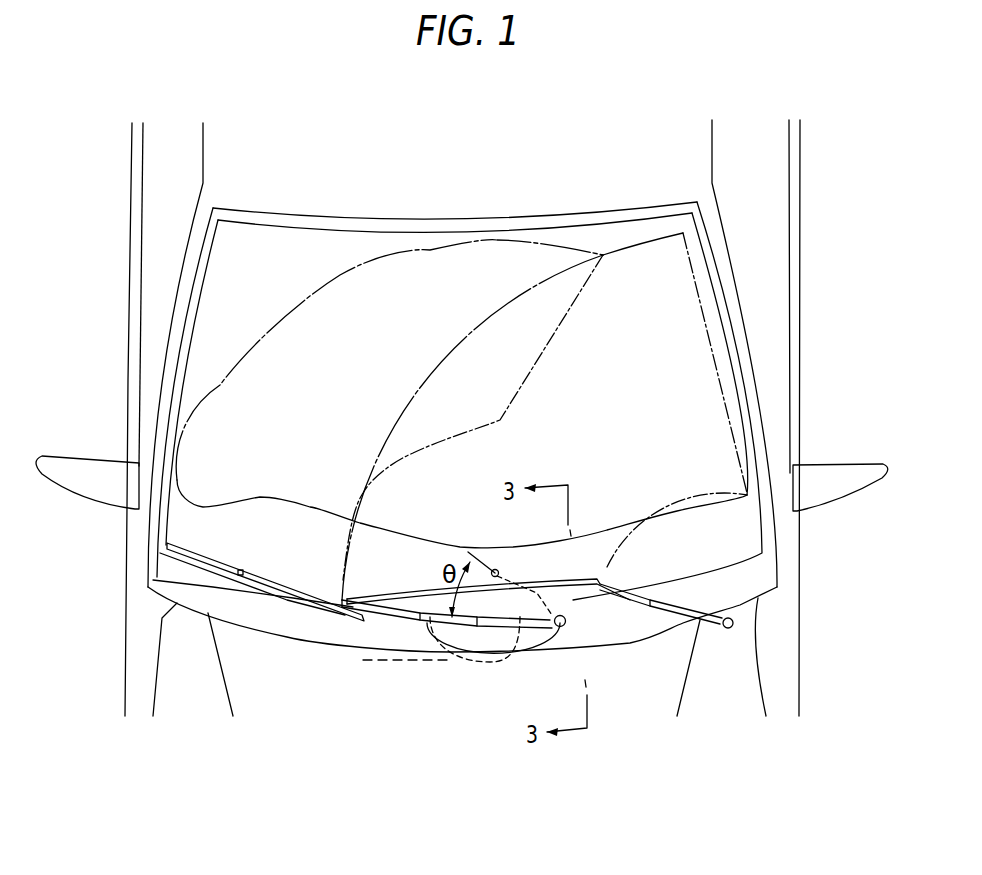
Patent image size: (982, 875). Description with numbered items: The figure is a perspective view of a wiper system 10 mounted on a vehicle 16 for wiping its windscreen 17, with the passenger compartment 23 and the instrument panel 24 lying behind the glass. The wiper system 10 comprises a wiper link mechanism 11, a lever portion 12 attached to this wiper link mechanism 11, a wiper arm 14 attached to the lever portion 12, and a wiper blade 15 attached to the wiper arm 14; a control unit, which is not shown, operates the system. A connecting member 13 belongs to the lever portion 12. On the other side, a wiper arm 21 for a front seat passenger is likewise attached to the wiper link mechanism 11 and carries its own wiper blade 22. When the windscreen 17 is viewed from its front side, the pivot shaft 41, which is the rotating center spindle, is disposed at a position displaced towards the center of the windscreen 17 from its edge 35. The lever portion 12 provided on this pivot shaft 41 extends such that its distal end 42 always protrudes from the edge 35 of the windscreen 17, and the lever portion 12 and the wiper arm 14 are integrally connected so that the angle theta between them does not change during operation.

The wiper system 10 is at (283, 617).
The wiper link mechanism 11 is at (392, 667).
The lever portion 12 is at (513, 658).
The connecting member 13 is at (560, 627).
The wiper arm 14 is at (390, 630).
The wiper blade 15 is at (210, 574).
The vehicle 16 is at (806, 177).
The windscreen 17 is at (669, 296).
The wiper arm for a front seat passenger 21 is at (735, 605).
The wiper blade 22 is at (600, 585).
The passenger compartment 23 is at (753, 306).
The instrument panel 24 is at (615, 530).
The edge 35 is at (423, 607).
The pivot shaft 41 is at (497, 571).
The distal end 42 is at (572, 618).